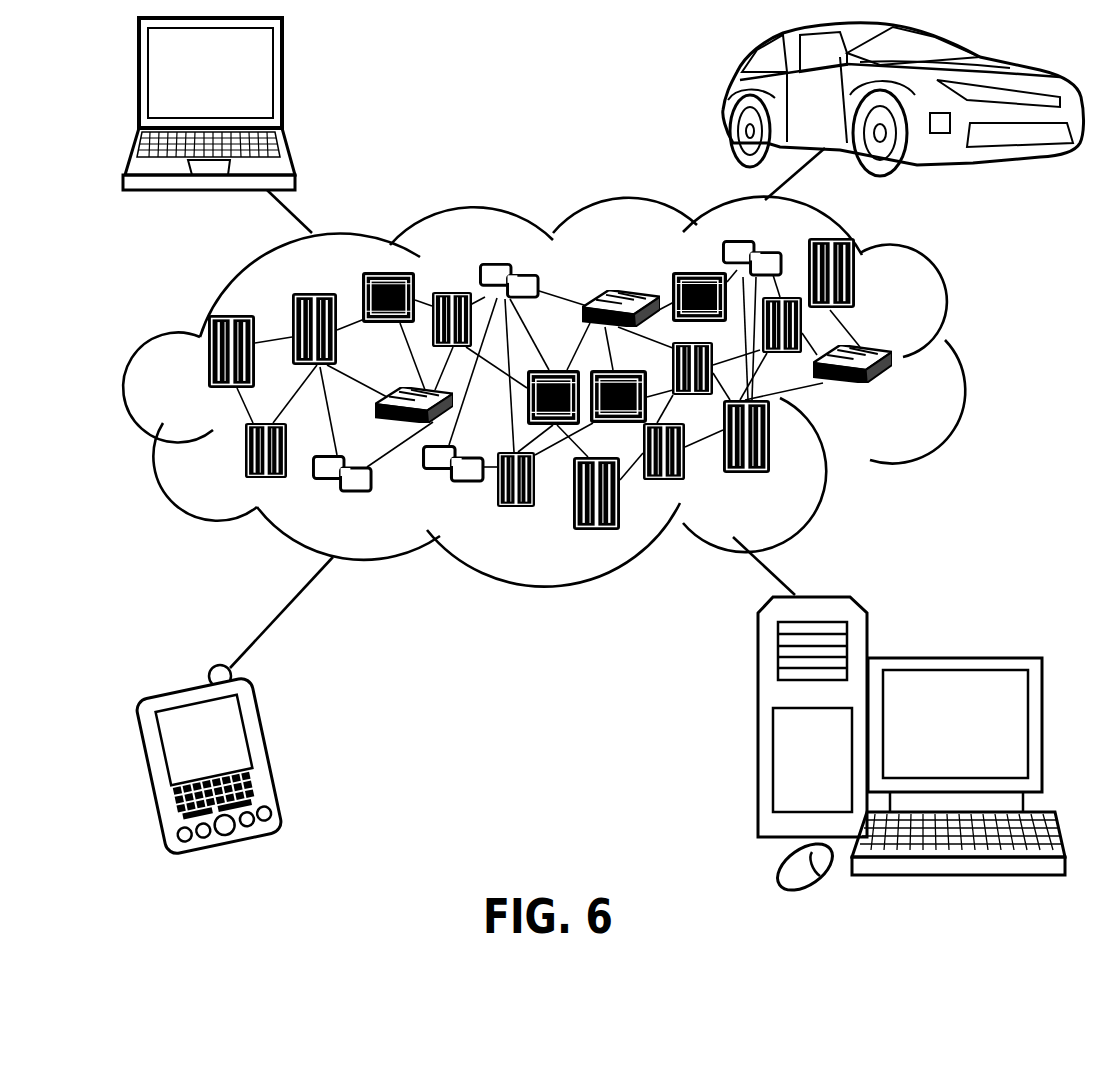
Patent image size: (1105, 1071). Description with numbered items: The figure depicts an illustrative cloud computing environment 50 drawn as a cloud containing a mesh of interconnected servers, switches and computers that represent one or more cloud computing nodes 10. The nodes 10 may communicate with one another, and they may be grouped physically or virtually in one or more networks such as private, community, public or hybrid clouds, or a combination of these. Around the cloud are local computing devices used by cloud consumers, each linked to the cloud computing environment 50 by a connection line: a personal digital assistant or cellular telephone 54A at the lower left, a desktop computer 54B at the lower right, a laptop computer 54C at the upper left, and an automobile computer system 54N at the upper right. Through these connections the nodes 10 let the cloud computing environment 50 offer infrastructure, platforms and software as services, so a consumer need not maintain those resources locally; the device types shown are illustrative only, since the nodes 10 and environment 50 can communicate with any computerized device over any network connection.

The cloud computing nodes 10 is at (602, 384).
The cloud computing environment 50 is at (953, 363).
The personal digital assistant (PDA) or cellular telephone 54A is at (277, 757).
The desktop computer 54B is at (953, 657).
The laptop computer 54C is at (282, 80).
The automobile computer system 54N is at (730, 97).